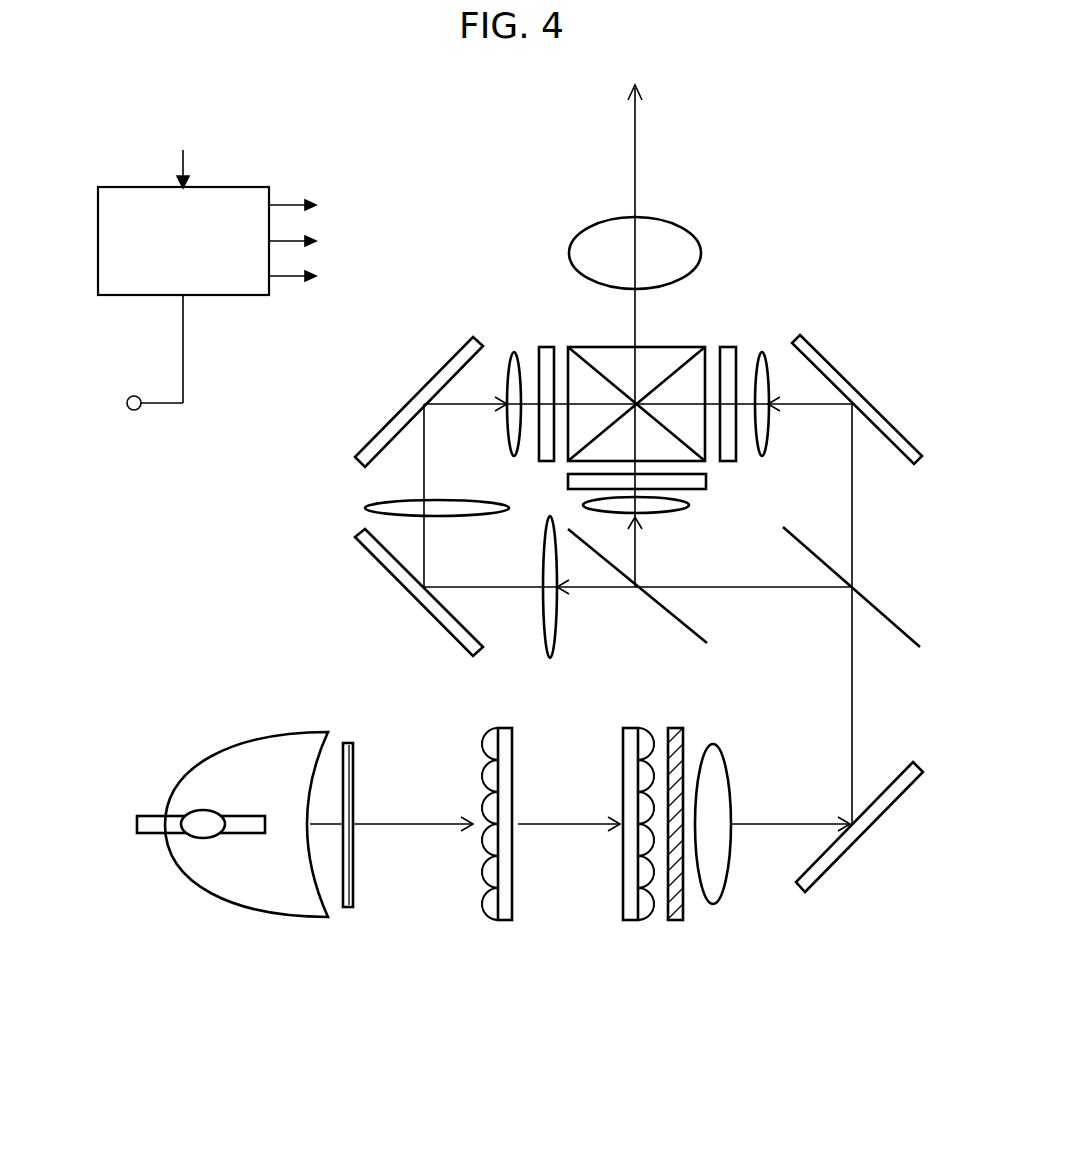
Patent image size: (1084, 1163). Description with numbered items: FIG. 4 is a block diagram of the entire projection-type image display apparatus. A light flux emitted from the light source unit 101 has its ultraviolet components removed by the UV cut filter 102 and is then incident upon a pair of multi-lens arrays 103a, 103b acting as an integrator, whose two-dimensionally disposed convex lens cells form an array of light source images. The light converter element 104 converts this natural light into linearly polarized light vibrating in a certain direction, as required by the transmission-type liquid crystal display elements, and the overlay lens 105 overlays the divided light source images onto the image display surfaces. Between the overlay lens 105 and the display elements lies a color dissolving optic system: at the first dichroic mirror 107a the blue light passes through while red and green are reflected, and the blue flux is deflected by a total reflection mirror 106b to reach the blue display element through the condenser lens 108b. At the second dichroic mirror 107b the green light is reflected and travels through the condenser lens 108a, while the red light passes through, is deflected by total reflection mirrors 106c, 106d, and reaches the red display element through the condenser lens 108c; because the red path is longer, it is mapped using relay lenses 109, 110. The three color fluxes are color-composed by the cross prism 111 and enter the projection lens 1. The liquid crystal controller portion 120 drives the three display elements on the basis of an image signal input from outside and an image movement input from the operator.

The projection lens 1 is at (577, 231).
The light source unit 101 is at (205, 895).
The UV cut filter 102 is at (352, 895).
The multi-lens array 103a is at (498, 905).
The multi-lens array 103b is at (622, 895).
The light converter element 104 is at (684, 895).
The overlay lens 105 is at (730, 870).
The total reflection mirror 106b is at (870, 375).
The total reflection mirror 106c is at (422, 590).
The total reflection mirror 106d is at (398, 408).
The first dichroic mirror 107a is at (878, 607).
The second dichroic mirror 107b is at (706, 645).
The condenser lens 108a is at (687, 503).
The condenser lens 108b is at (761, 457).
The condenser lens 108c is at (513, 355).
The relay lens 109 is at (553, 655).
The relay lens 110 is at (370, 507).
The cross prism 111 is at (700, 346).
The liquid crystal controller portion 120 is at (245, 187).